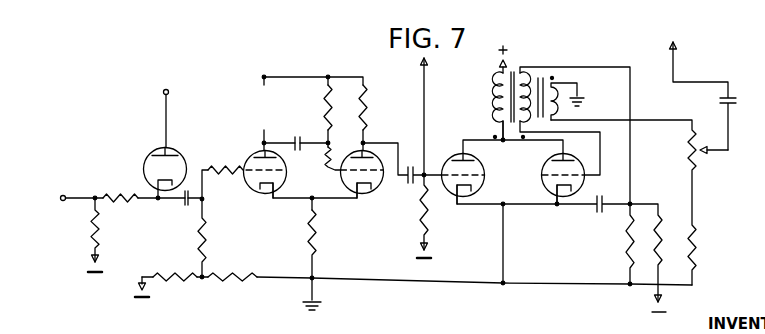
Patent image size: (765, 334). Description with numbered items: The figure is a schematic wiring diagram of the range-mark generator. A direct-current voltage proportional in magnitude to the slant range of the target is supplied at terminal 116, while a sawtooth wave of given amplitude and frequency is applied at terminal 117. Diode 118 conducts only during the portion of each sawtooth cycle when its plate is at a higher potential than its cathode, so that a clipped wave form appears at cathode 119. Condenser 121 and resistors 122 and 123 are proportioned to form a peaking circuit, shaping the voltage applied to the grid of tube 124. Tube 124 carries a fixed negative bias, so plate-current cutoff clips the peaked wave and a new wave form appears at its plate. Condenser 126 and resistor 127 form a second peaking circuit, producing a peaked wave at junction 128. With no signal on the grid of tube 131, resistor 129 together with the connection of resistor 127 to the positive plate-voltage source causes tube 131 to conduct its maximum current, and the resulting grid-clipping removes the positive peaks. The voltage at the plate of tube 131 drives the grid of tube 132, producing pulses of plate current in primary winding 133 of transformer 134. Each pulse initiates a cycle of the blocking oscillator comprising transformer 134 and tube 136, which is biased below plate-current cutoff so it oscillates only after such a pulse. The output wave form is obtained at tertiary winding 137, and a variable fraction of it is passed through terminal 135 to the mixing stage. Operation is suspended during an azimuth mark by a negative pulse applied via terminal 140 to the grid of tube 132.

The terminal 116 is at (62, 207).
The terminal 117 is at (170, 92).
The diode 118 is at (146, 158).
The cathode 119 is at (158, 200).
The condenser 121 is at (186, 209).
The resistor 122 is at (208, 226).
The resistor 123 is at (241, 259).
The tube 124 is at (250, 152).
The condenser 126 is at (295, 140).
The resistor 127 is at (333, 113).
The junction 128 is at (329, 152).
The resistor 129 is at (327, 164).
The tube 131 is at (377, 191).
The tube 132 is at (445, 168).
The primary winding 133 is at (493, 94).
The transformer 134 is at (522, 65).
The terminal 135 is at (676, 47).
The tube 136 is at (542, 167).
The tertiary winding 137 is at (583, 96).
The terminal 140 is at (428, 67).